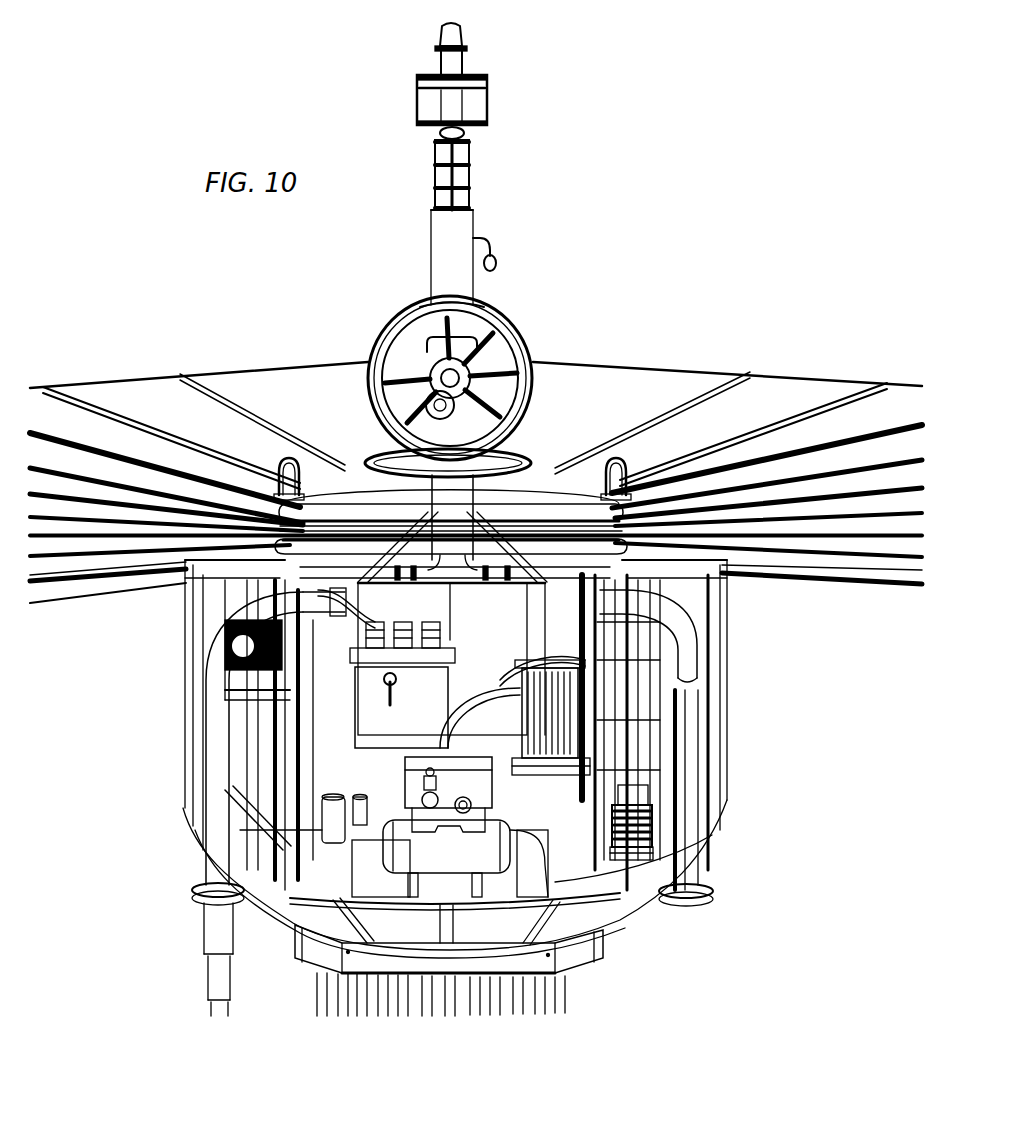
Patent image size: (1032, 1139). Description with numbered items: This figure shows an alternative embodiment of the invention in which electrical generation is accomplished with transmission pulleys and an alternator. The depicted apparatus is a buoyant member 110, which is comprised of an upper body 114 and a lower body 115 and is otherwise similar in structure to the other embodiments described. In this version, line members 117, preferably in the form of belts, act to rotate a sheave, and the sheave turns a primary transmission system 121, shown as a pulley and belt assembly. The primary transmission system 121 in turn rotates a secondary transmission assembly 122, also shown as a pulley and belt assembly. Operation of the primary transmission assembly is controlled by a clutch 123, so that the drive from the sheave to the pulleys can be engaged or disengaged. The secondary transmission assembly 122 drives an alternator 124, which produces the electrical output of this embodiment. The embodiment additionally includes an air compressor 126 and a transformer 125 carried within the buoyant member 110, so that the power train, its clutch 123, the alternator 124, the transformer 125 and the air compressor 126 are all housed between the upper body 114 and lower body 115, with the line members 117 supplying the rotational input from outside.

The buoyant member 110 is at (667, 306).
The upper body 114 is at (772, 364).
The lower body 115 is at (726, 780).
The line members 117 is at (568, 1002).
The primary transmission system 121 is at (643, 714).
The secondary transmission assembly 122 is at (583, 683).
The clutch 123 is at (657, 818).
The alternator 124 is at (580, 729).
The transformer 125 is at (375, 713).
The air compressor 126 is at (505, 806).